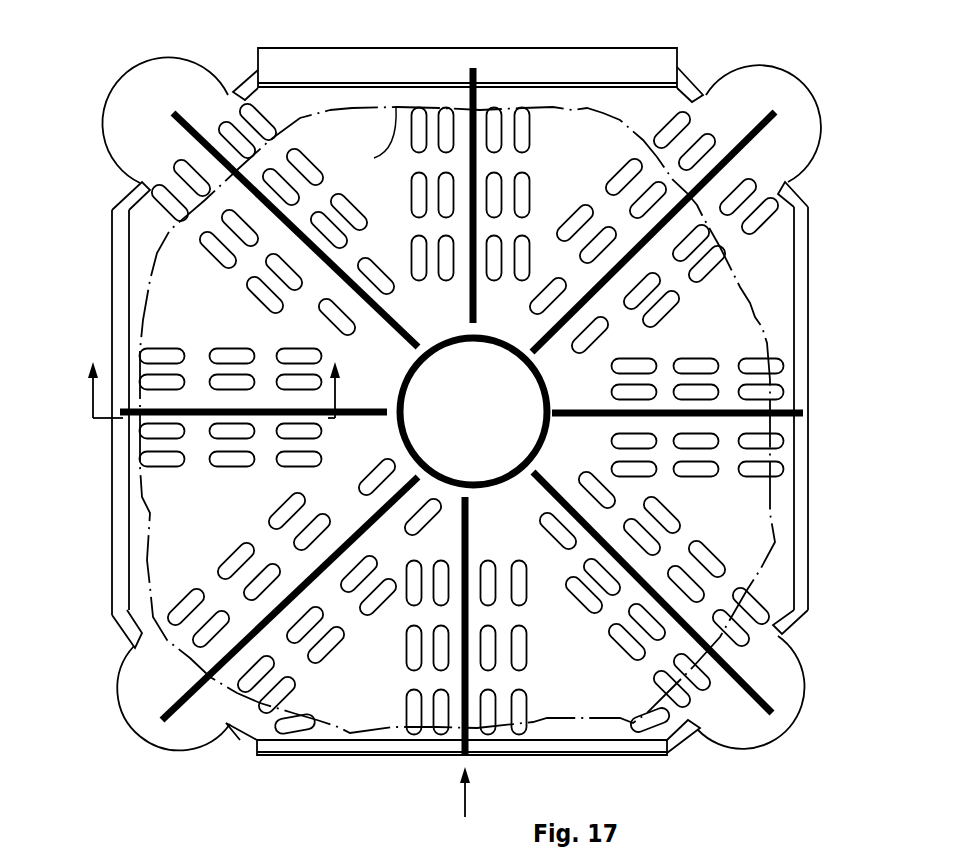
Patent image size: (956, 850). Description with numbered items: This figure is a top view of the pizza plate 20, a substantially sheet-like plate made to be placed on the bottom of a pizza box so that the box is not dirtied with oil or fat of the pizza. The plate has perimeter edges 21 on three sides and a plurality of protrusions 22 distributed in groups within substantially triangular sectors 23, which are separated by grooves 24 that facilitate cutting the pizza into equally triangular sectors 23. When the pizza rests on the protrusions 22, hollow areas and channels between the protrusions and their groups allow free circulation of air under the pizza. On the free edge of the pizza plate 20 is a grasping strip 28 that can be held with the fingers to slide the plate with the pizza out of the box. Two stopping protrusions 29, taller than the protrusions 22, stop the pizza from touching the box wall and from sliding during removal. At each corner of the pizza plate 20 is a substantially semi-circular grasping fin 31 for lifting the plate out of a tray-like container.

The pizza plate 20 is at (692, 32).
The perimeter edges 21 is at (792, 292).
The protrusions 22 is at (167, 612).
The triangular sectors 23 is at (380, 688).
The grooves 24 is at (537, 343).
The grasping strip 28 is at (594, 36).
The stopping protrusions 29 is at (298, 730).
The grasping fin 31 is at (158, 128).